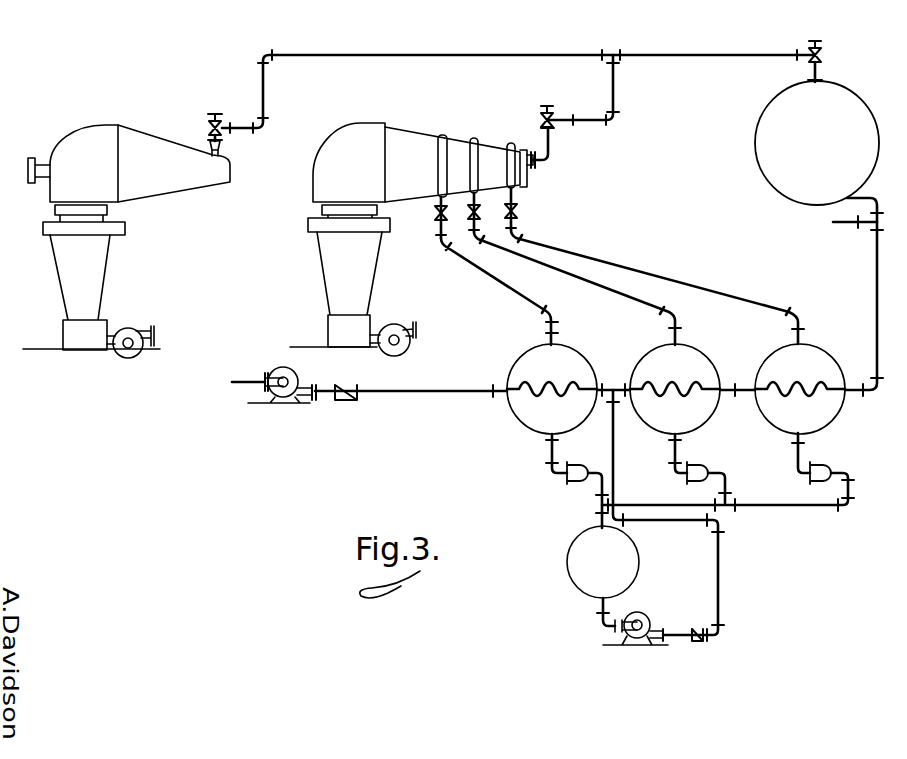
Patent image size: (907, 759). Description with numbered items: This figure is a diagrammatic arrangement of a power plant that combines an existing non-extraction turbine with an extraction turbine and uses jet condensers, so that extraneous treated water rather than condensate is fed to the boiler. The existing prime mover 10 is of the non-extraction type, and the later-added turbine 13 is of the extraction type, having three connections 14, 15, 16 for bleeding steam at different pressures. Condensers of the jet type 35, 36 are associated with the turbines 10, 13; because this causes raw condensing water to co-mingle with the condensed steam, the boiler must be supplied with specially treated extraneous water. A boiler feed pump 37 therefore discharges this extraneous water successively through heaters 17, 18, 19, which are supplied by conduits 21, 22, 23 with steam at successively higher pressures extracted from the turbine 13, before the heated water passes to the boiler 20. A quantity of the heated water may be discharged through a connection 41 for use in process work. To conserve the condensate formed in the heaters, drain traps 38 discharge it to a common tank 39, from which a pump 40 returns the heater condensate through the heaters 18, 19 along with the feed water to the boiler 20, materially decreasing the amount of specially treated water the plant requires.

The prime mover 10 is at (148, 148).
The turbine 13 is at (400, 143).
The connection 14 is at (513, 206).
The connection 15 is at (472, 201).
The connection 16 is at (437, 202).
The heater 17 is at (513, 365).
The heater 18 is at (641, 360).
The heater 19 is at (790, 355).
The boiler 20 is at (758, 124).
The conduit 21 is at (521, 292).
The conduit 22 is at (622, 293).
The conduit 23 is at (633, 268).
The jet condenser 35 is at (105, 256).
The jet condenser 36 is at (365, 265).
The boiler feed pump 37 is at (296, 371).
The drain trap 38 is at (586, 467).
The common tank 39 is at (628, 563).
The pump 40 is at (640, 613).
The connection 41 is at (833, 222).